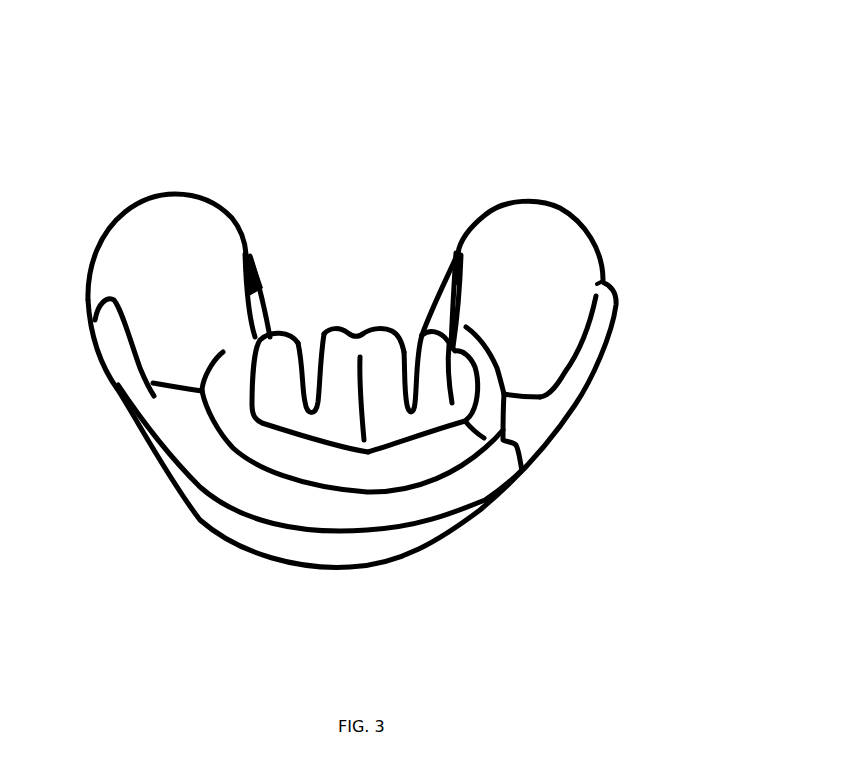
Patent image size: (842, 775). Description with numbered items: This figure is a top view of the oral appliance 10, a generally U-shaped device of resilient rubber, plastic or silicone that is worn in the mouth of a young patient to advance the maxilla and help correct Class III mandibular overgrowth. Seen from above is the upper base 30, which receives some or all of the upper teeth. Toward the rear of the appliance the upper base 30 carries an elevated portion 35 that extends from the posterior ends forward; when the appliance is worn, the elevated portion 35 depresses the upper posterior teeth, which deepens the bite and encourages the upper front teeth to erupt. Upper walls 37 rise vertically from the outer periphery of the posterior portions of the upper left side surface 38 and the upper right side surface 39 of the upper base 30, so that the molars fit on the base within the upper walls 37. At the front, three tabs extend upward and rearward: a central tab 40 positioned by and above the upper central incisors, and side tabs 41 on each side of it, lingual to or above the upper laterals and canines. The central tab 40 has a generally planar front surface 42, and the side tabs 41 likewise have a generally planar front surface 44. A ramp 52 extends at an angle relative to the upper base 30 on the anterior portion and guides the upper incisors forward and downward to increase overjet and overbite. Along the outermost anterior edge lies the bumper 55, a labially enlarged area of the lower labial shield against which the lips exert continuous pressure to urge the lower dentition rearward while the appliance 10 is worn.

The appliance 10 is at (601, 119).
The upper base 30 is at (200, 227).
The elevated portion 35 is at (153, 262).
The upper walls 37 is at (105, 340).
The upper left side surface 38 is at (515, 410).
The upper right side surface 39 is at (185, 412).
The central tab 40 is at (358, 330).
The side tabs 41 is at (287, 330).
The front surface 42 is at (380, 360).
The front surface 44 is at (283, 360).
The ramp 52 is at (290, 455).
The bumper 55 is at (320, 570).